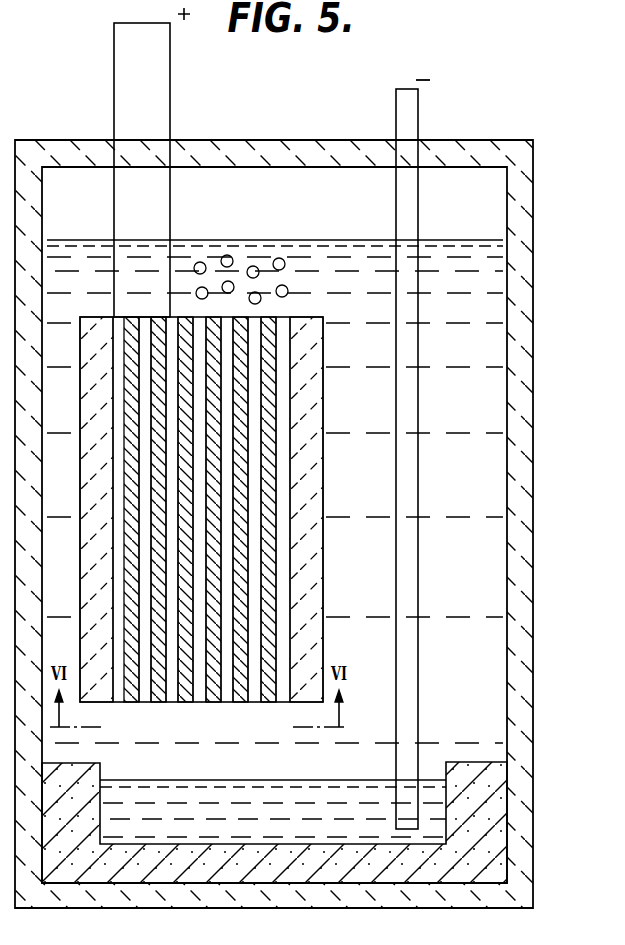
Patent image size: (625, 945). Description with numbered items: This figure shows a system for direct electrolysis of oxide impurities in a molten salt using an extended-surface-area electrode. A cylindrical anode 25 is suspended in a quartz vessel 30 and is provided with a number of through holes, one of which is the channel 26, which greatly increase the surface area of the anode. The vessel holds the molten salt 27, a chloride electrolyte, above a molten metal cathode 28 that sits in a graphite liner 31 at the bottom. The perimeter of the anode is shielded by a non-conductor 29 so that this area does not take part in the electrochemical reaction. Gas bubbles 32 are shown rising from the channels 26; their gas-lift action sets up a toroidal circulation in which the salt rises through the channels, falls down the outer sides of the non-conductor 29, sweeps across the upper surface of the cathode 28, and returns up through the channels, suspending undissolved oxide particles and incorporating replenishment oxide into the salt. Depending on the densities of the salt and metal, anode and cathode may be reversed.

The cylindrical anode 25 is at (278, 481).
The channel 26 is at (283, 598).
The molten salt 27 is at (497, 346).
The molten metal cathode 28 is at (186, 783).
The non-conductor 29 is at (306, 358).
The quartz vessel 30 is at (531, 510).
The graphite liner 31 is at (498, 773).
The gas bubbles 32 is at (283, 259).